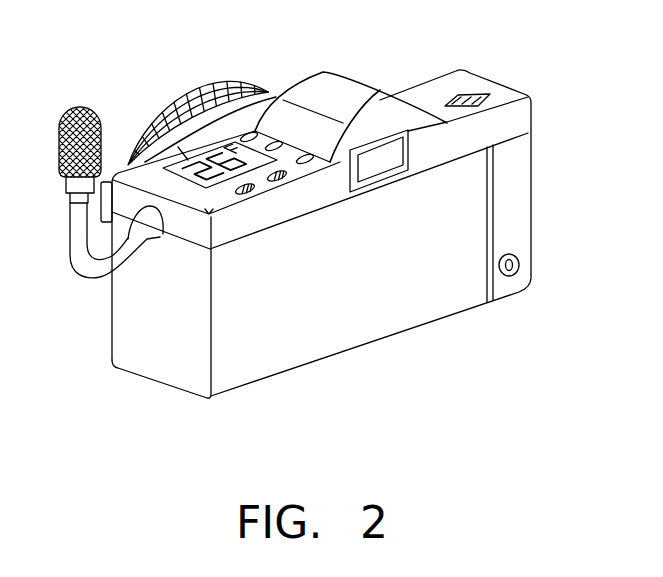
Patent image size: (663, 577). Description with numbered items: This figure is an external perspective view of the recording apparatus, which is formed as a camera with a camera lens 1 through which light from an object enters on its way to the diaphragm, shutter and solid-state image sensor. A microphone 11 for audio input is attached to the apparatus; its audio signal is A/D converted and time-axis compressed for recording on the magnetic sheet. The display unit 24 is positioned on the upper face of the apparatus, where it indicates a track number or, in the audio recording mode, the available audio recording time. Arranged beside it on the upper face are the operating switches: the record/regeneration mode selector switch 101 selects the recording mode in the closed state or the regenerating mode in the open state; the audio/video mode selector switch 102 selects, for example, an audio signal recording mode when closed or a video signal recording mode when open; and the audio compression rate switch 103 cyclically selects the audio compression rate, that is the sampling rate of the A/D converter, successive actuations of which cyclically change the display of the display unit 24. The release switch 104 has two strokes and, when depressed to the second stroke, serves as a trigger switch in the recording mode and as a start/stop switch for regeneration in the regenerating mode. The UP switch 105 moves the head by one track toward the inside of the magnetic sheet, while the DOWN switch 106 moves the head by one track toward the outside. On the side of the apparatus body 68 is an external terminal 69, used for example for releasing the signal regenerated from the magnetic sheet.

The camera lens 1 is at (205, 88).
The microphone 11 is at (72, 106).
The display unit 24 is at (153, 128).
The housing 68 is at (432, 325).
The external terminal 69 is at (512, 274).
The record/regeneration mode selector switch 101 is at (250, 134).
The audio/video mode selector switch 102 is at (278, 146).
The audio compression rate switch 103 is at (307, 157).
The release switch 104 is at (465, 92).
The UP switch 105 is at (245, 193).
The DOWN switch 106 is at (278, 180).